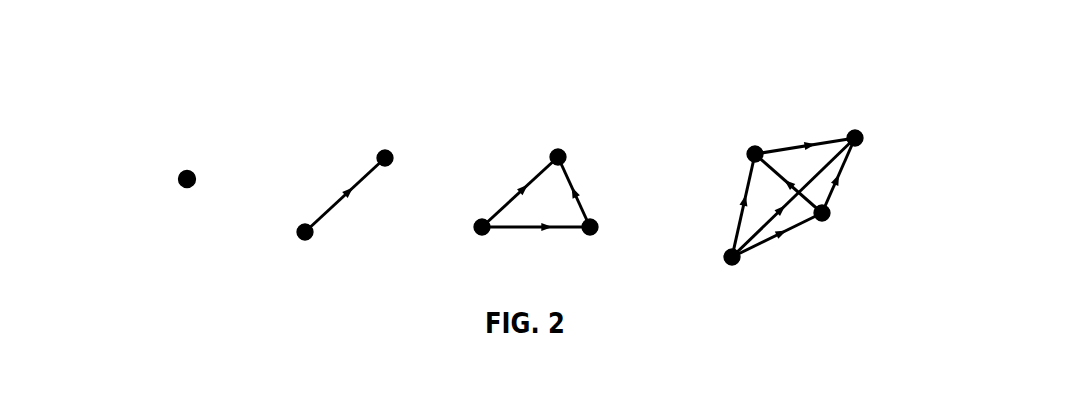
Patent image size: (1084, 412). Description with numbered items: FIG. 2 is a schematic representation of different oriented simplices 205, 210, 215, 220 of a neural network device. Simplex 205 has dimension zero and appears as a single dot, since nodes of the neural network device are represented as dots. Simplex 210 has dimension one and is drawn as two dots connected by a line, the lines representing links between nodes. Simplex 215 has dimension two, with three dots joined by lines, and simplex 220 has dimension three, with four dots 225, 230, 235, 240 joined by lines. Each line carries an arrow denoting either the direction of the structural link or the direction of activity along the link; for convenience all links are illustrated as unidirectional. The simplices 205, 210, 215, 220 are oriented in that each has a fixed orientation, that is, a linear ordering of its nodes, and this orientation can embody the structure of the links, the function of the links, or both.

The simplex 205 is at (147, 128).
The simplex 210 is at (306, 128).
The simplex 215 is at (489, 127).
The simplex 220 is at (709, 132).
The first node 225 is at (737, 262).
The second node 230 is at (828, 218).
The third node 235 is at (760, 148).
The fourth node 240 is at (855, 132).